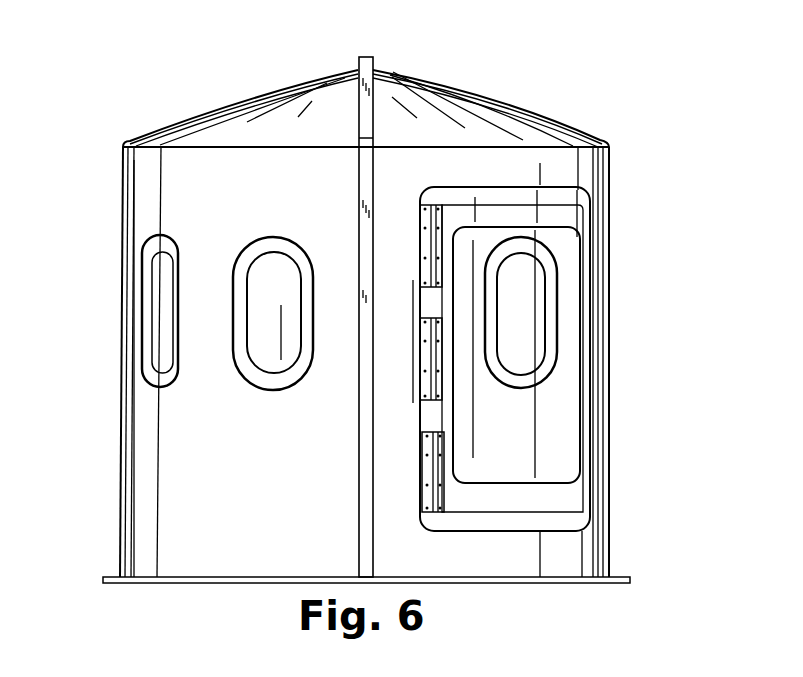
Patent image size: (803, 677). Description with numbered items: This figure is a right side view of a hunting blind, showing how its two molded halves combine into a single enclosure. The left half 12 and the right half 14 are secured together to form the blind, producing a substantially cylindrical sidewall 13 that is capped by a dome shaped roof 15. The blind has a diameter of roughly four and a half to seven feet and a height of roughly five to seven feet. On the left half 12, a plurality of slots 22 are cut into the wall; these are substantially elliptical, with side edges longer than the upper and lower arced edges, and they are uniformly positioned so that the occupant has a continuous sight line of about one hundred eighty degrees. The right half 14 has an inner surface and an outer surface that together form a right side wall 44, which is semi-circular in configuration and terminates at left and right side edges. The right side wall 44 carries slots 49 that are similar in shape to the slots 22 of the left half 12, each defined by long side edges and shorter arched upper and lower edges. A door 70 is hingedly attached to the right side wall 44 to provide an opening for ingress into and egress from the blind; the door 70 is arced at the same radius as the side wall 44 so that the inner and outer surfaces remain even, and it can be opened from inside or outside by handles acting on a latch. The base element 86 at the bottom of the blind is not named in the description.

The left half 12 is at (216, 562).
The cylindrical sidewall 13 is at (145, 420).
The right half 14 is at (523, 570).
The dome shaped roof 15 is at (500, 121).
The slots 22 is at (158, 317).
The right side wall 44 is at (583, 172).
The slots 49 is at (517, 304).
The door 70 is at (562, 497).
The base 86 is at (260, 584).